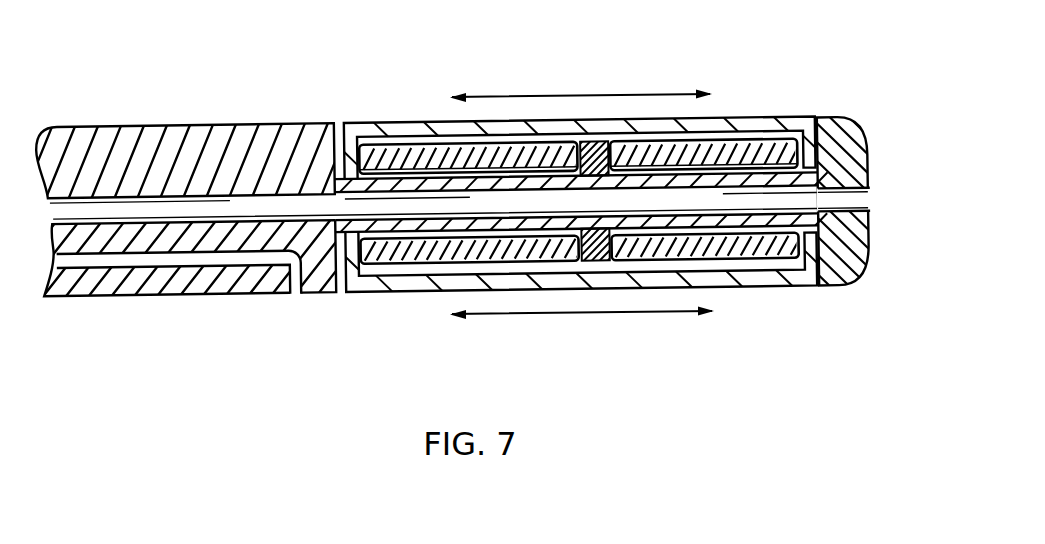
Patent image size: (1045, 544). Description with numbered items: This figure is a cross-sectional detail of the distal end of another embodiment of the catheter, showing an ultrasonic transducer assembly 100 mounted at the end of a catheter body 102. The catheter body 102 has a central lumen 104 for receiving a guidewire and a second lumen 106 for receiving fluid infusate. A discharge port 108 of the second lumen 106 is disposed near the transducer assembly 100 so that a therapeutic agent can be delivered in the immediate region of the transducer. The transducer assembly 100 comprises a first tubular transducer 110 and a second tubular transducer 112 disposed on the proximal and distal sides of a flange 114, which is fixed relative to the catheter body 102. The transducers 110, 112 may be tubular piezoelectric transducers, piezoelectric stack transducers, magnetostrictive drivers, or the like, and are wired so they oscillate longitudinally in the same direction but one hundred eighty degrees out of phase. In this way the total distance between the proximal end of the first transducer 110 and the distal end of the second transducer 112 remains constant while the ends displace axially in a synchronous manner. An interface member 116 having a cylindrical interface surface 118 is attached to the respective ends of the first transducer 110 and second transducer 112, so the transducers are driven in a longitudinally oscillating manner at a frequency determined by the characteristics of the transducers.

The ultrasonic transducer assembly 100 is at (781, 55).
The catheter body 102 is at (143, 131).
The central lumen 104 is at (213, 210).
The second lumen 106 is at (200, 258).
The discharge port 108 is at (293, 287).
The first tubular transducer 110 is at (402, 163).
The second tubular transducer 112 is at (740, 255).
The flange 114 is at (597, 263).
The interface member 116 is at (805, 282).
The cylindrical interface surface 118 is at (791, 118).